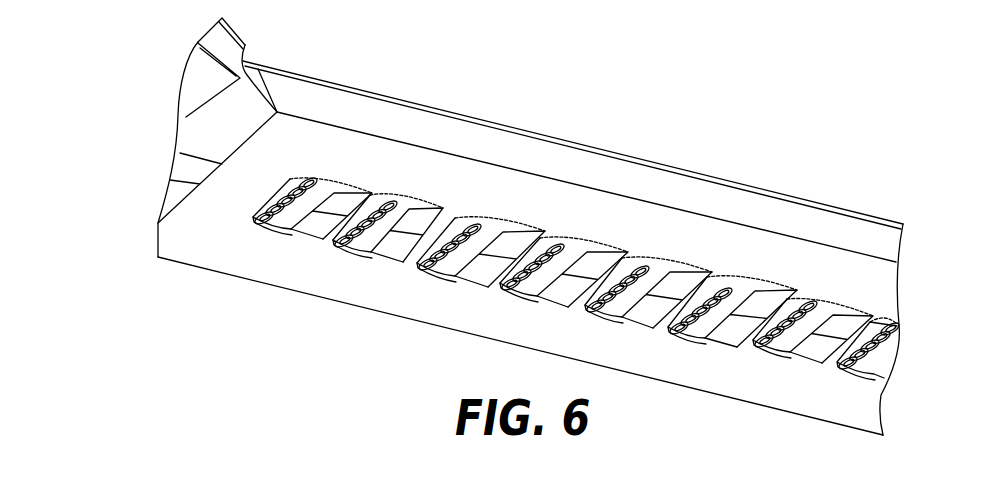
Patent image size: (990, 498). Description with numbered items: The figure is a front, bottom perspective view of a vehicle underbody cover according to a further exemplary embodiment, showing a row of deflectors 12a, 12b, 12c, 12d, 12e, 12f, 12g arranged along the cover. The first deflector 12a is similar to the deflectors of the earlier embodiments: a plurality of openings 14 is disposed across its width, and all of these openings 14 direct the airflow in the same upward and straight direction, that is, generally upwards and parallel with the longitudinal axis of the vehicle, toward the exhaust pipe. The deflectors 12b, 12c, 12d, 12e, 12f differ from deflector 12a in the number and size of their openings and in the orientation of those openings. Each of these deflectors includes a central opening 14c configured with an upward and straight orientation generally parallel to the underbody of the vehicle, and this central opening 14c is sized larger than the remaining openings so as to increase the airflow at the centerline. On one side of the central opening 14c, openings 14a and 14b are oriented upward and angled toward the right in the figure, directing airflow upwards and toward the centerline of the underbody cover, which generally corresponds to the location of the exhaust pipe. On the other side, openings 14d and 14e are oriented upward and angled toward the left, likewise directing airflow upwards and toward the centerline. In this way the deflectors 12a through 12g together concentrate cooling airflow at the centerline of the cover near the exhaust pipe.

The deflector 12a is at (316, 188).
The deflector 12b is at (402, 202).
The deflector 12c is at (488, 227).
The deflector 12d is at (570, 243).
The deflector 12e is at (655, 265).
The deflector 12f is at (737, 285).
The deflector 12g is at (817, 308).
The openings 14 is at (287, 195).
The opening 14a is at (350, 246).
The opening 14b is at (341, 240).
The central opening 14c is at (364, 215).
The opening 14d is at (380, 205).
The opening 14e is at (388, 207).